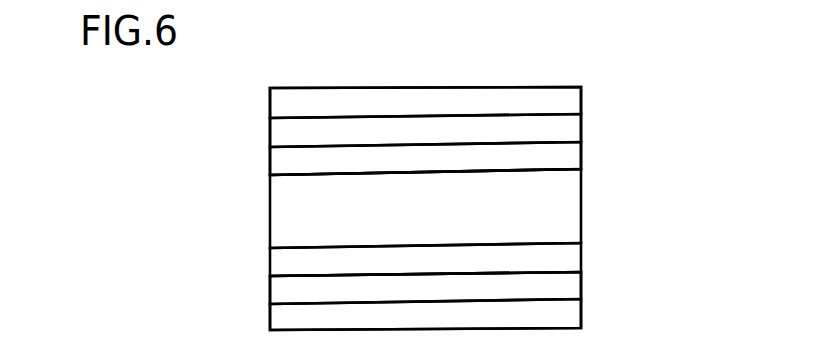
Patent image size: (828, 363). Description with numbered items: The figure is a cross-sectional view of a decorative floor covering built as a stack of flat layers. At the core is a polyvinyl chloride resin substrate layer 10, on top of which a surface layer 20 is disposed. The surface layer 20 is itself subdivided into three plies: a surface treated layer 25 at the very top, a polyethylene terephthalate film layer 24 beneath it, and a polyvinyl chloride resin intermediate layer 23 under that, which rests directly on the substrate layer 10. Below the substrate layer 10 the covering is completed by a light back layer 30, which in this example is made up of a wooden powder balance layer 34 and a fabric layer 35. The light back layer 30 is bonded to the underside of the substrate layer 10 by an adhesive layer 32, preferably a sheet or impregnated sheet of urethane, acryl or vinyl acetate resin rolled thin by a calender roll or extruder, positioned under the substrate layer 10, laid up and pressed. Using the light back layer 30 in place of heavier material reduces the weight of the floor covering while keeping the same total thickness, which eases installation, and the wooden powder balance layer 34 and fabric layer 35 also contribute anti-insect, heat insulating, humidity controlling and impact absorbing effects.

The polyvinyl chloride resin substrate layer 10 is at (276, 211).
The surface layer 20 is at (677, 86).
The polyvinyl chloride resin intermediate layer 23 is at (581, 160).
The polyethylene terephthalate film layer 24 is at (581, 130).
The surface treated layer 25 is at (581, 101).
The light back layer 30 is at (678, 273).
The adhesive layer 32 is at (581, 255).
The wooden powder balance layer 34 is at (581, 286).
The fabric layer 35 is at (581, 317).